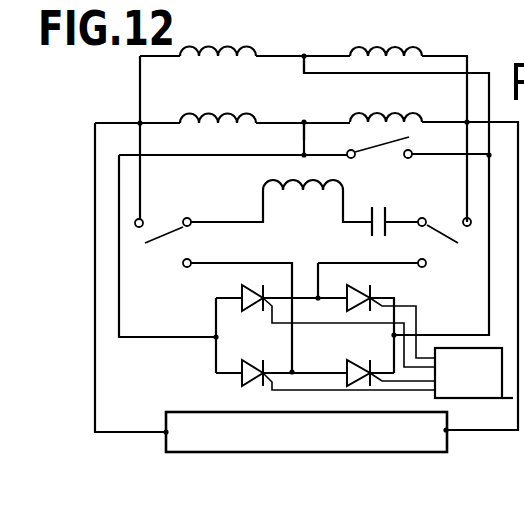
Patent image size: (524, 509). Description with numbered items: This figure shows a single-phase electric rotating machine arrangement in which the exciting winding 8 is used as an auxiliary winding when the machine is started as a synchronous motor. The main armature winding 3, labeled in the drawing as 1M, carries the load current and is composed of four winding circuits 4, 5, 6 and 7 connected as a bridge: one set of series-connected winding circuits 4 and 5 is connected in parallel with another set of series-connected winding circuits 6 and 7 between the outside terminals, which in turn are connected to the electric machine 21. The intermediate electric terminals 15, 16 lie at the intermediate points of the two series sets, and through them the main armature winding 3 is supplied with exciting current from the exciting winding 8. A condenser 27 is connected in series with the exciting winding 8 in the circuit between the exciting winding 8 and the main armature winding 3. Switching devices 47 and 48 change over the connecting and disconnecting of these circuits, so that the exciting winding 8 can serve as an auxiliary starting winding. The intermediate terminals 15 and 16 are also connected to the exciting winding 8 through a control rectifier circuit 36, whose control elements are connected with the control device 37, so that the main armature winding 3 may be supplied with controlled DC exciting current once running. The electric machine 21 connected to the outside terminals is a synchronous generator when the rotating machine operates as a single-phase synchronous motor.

The motor 1M is at (272, 28).
The main armature winding 3 is at (303, 114).
The winding circuit 4 is at (237, 58).
The winding circuit 5 is at (411, 50).
The winding circuit 6 is at (230, 110).
The winding circuit 7 is at (405, 112).
The intermediate electric terminal 15 is at (302, 58).
The intermediate electric terminal 16 is at (302, 125).
The exciting winding 8 is at (304, 194).
The condenser 27 is at (391, 212).
The switching device 47 is at (280, 202).
The switching device 48 is at (444, 223).
The control rectifier circuit 36 is at (310, 337).
The control device 37 is at (474, 373).
The electric machine 21 is at (182, 453).